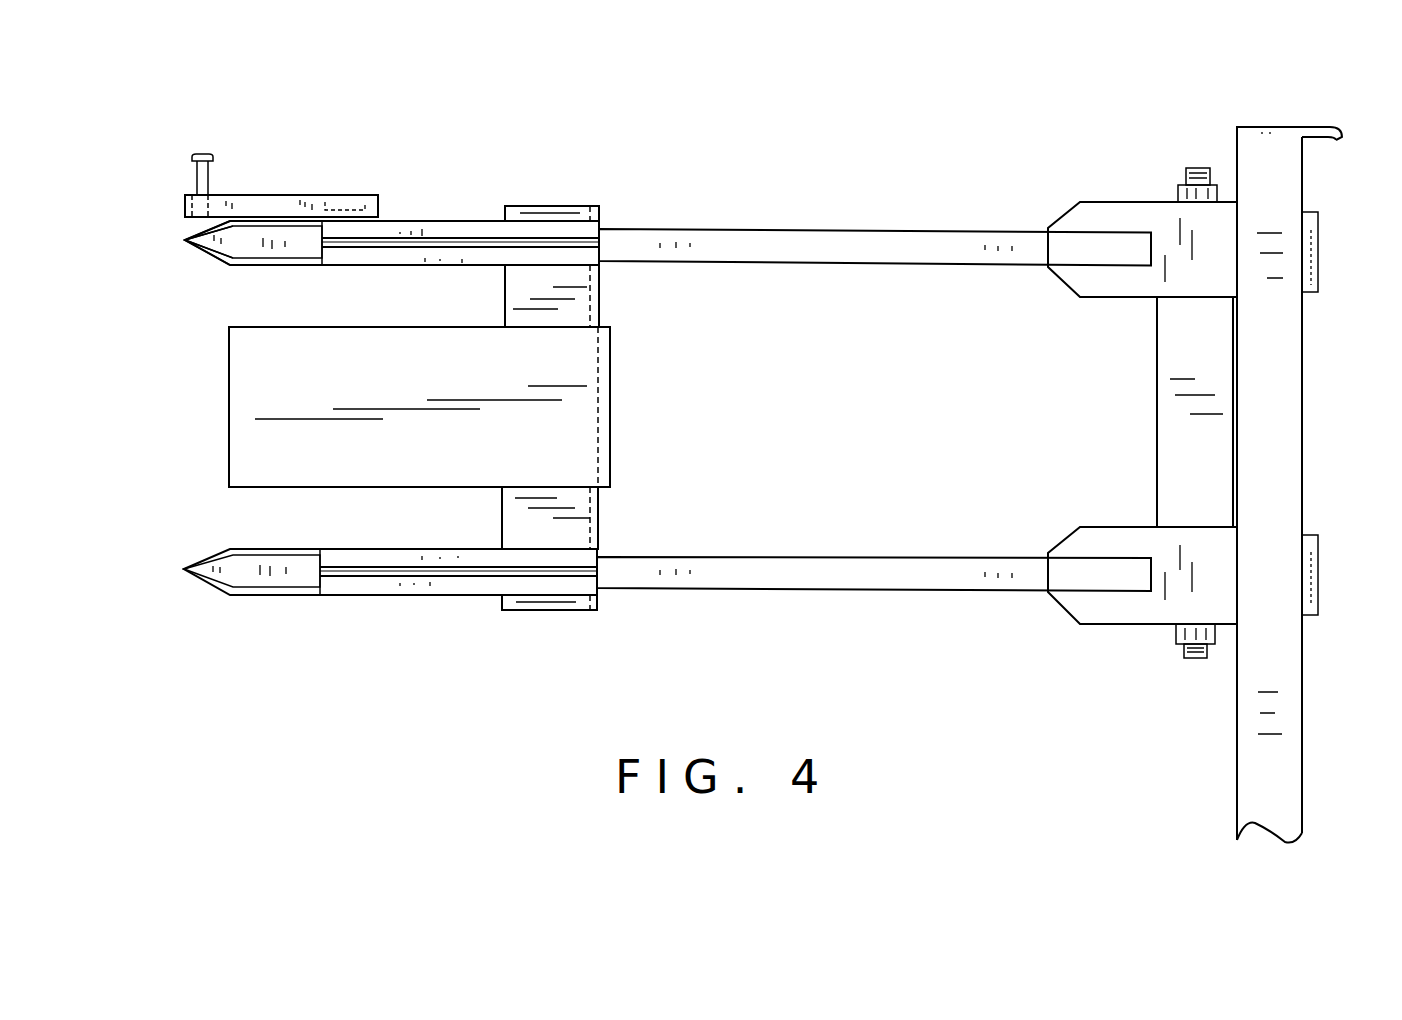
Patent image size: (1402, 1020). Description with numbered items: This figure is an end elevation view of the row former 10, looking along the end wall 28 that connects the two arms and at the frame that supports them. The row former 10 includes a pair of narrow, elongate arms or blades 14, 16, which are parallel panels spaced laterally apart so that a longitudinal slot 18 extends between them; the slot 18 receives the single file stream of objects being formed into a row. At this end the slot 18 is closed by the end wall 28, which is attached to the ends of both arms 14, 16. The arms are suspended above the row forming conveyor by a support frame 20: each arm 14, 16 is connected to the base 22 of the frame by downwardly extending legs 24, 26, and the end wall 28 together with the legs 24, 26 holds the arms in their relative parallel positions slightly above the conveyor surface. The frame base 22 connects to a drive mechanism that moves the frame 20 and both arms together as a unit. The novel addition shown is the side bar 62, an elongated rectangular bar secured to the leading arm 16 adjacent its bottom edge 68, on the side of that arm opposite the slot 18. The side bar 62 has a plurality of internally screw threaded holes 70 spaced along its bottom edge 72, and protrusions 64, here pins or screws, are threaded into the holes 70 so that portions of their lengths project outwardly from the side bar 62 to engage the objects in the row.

The row former 10 is at (898, 625).
The arm 14 is at (483, 588).
The leading arm 16 is at (441, 229).
The longitudinal slot 18 is at (413, 510).
The support frame 20 is at (1338, 503).
The frame base 22 is at (1263, 375).
The leg 24 is at (810, 577).
The leg 26 is at (807, 232).
The end wall 28 is at (597, 518).
The side bar 62 is at (298, 193).
The protrusion 64 is at (212, 175).
The bottom edge 68 is at (187, 242).
The screw threaded hole 70 is at (182, 200).
The bottom edge 72 is at (180, 212).